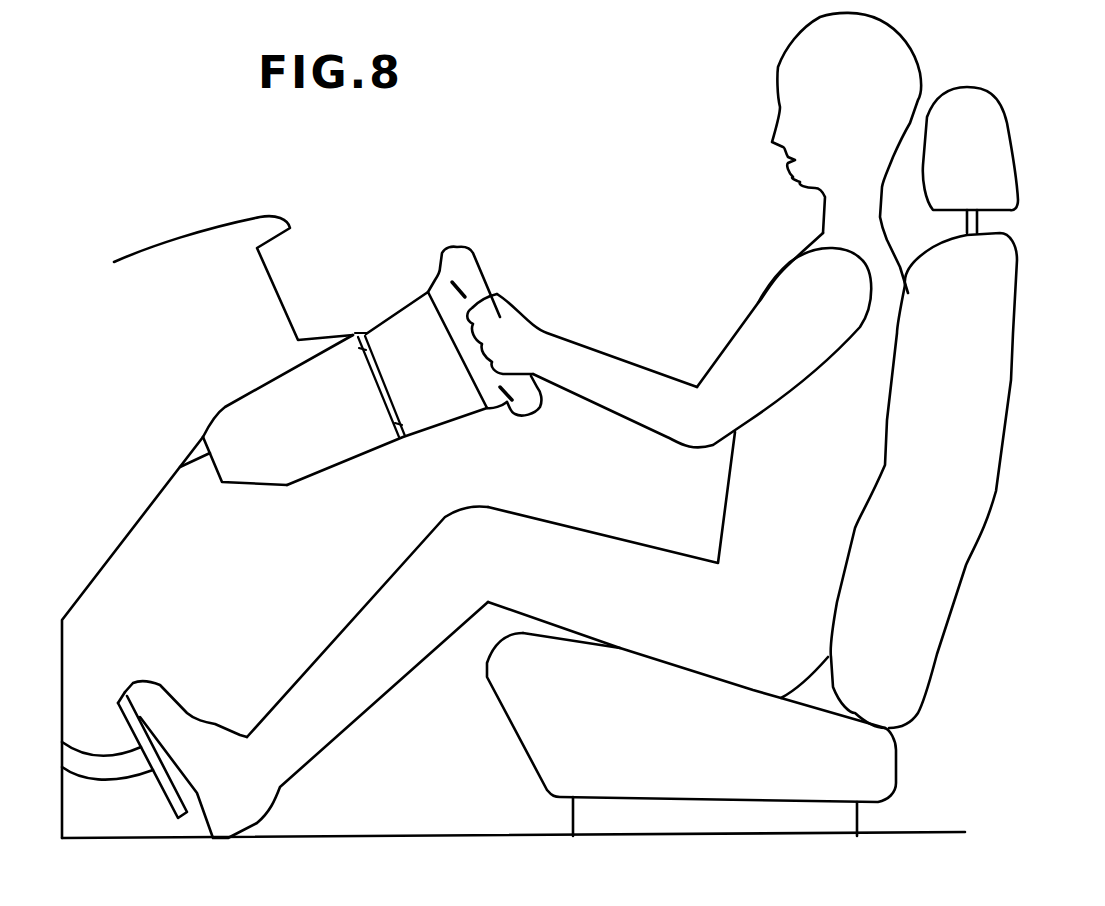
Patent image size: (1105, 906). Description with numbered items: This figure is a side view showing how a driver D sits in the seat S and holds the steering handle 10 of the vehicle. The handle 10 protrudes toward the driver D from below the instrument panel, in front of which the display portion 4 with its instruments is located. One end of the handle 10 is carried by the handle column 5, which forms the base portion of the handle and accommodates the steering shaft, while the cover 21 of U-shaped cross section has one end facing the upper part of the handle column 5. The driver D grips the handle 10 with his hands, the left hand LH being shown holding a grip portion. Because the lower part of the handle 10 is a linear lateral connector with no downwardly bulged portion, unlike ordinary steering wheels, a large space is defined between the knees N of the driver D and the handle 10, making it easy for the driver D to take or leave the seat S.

The display portion 4 is at (282, 295).
The handle column 5 is at (320, 457).
The steering handle 10 is at (479, 257).
The cover 21 is at (442, 402).
The left hand LH is at (517, 323).
The knees N is at (513, 523).
The driver D is at (850, 463).
The seat S is at (768, 730).